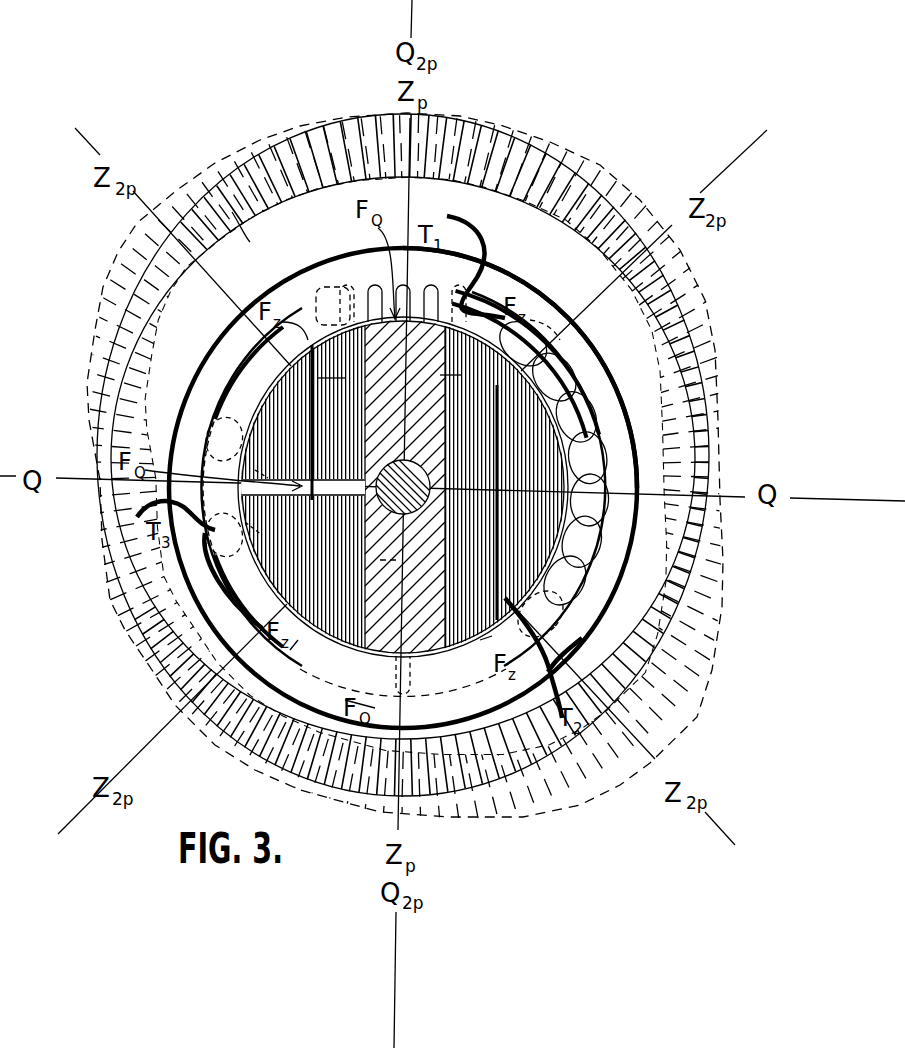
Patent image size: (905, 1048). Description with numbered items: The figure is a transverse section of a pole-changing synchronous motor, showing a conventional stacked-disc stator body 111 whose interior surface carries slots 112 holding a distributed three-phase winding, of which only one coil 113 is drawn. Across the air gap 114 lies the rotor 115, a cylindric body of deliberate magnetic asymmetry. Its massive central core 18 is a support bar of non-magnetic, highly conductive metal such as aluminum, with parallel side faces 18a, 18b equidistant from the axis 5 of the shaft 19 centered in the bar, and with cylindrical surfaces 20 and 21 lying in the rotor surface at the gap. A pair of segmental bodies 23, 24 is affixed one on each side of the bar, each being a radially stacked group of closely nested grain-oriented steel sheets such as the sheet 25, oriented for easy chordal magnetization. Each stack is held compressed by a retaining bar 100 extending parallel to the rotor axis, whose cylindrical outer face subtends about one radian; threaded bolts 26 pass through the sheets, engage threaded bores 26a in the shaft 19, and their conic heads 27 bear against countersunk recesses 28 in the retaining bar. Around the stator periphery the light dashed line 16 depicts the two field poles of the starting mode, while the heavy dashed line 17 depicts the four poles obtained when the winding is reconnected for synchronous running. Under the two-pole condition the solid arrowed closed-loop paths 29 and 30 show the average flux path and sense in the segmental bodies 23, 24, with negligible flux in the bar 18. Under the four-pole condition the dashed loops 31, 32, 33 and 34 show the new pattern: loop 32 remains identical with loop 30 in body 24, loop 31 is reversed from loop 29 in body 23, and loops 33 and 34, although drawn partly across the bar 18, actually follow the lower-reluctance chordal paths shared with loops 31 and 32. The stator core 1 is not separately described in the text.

The stator core 1 is at (250, 236).
The axis 5 is at (432, 500).
The light dashed line (2-pole MMF curve) 16 is at (598, 195).
The heavy dashed line (4-pole MMF curve) 17 is at (112, 278).
The central core (support bar) 18 is at (412, 419).
The side face of support bar 18a is at (347, 373).
The side face of support bar 18b is at (476, 371).
The shaft 19 is at (472, 502).
The cylindrical surface of support bar 20 is at (403, 287).
The cylindrical surface of support bar 21 is at (405, 660).
The segmental body 23 is at (303, 518).
The segmental body 24 is at (505, 522).
The sheet (strip) 25 is at (492, 636).
The threaded bolt 26 is at (432, 434).
The threaded bore 26a is at (393, 546).
The conic head 27 is at (231, 518).
The countersunk recess 28 is at (255, 470).
The closed-loop flux path 29 is at (212, 408).
The closed-loop flux path 30 is at (645, 465).
The closed-loop flux path 31 is at (205, 478).
The closed-loop flux path 32 is at (617, 541).
The closed-loop flux path 33 is at (360, 298).
The closed-loop flux path 34 is at (406, 698).
The retaining bar 100 is at (603, 532).
The stator body 111 is at (640, 556).
The slots 112 is at (596, 460).
The coil 113 is at (595, 368).
The air gap 114 is at (320, 652).
The rotor 115 is at (345, 686).